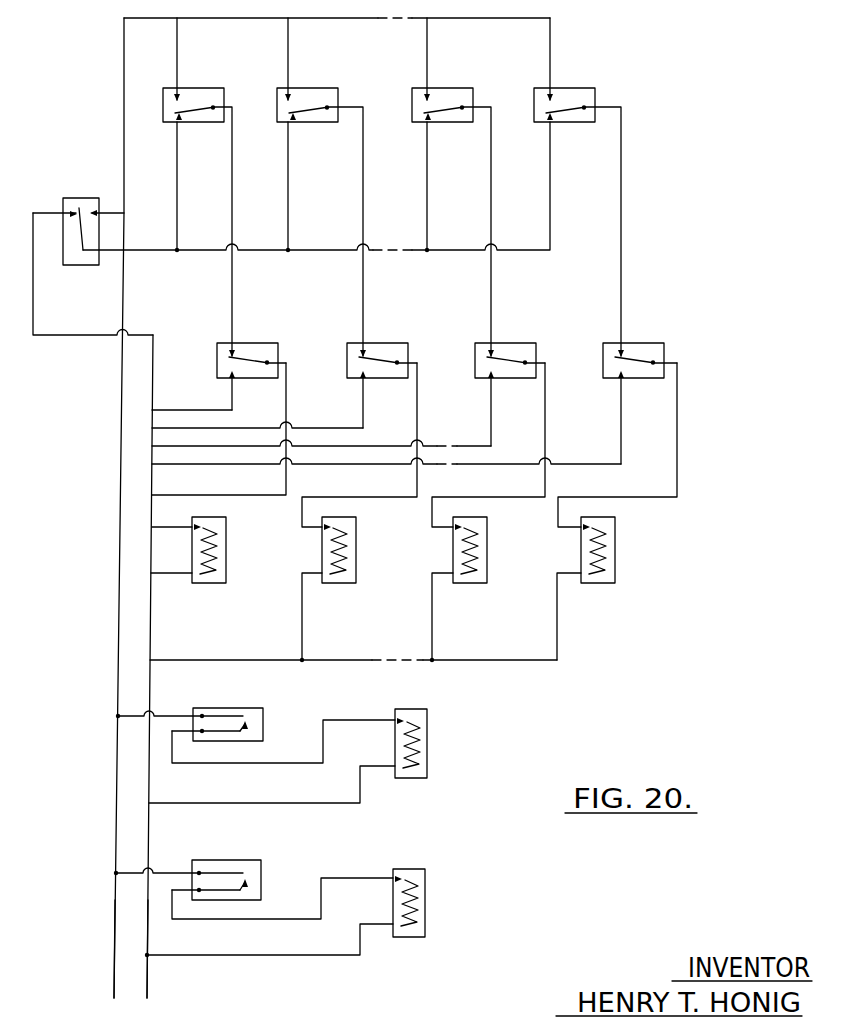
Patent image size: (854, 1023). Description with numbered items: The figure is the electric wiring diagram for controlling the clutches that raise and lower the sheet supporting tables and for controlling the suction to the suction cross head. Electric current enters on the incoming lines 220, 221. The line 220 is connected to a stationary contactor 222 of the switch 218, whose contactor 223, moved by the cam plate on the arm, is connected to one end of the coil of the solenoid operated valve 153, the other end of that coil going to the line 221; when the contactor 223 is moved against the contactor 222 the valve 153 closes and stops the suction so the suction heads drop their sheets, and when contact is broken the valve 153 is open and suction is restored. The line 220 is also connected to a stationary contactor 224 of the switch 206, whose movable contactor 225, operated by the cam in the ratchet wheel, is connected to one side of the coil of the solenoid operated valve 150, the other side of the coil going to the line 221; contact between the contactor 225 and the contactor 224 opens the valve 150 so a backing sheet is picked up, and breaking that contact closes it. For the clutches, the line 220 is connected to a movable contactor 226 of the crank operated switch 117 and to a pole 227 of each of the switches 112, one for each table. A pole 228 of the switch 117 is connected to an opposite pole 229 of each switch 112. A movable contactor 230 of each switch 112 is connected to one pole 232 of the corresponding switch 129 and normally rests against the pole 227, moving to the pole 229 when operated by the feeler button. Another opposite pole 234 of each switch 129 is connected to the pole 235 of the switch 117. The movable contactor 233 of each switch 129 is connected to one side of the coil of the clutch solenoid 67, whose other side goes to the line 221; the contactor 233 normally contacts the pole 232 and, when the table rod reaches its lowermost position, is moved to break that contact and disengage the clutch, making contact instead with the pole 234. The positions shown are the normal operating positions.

The switch 112 is at (167, 104).
The opposite pole 229 is at (179, 92).
The movable contactor 230 is at (210, 103).
The pole 227 is at (182, 118).
The switch 117 is at (79, 207).
The pole 228 is at (90, 210).
The pole 235 is at (74, 214).
The movable contactor 226 is at (84, 238).
The pole 232 is at (230, 350).
The movable contactor 233 is at (246, 356).
The opposite pole 234 is at (229, 372).
The switch 129 is at (245, 366).
The solenoid 67 is at (227, 547).
The stationary contactor 224 is at (237, 715).
The switch 206 is at (258, 717).
The movable contactor 225 is at (247, 733).
The solenoid operated valve 150 is at (428, 745).
The stationary contactor 222 is at (236, 872).
The switch 218 is at (259, 876).
The contactor 223 is at (243, 892).
The solenoid operated valve 153 is at (428, 903).
The incoming line 220 is at (114, 978).
The incoming line 221 is at (148, 983).